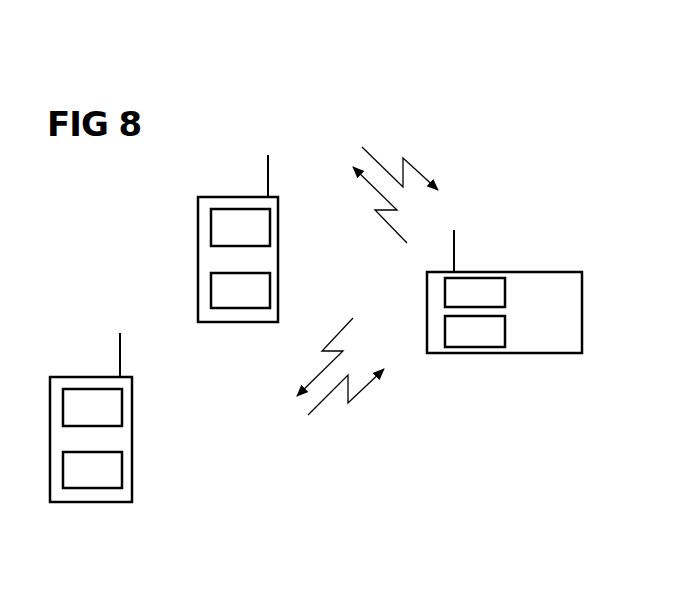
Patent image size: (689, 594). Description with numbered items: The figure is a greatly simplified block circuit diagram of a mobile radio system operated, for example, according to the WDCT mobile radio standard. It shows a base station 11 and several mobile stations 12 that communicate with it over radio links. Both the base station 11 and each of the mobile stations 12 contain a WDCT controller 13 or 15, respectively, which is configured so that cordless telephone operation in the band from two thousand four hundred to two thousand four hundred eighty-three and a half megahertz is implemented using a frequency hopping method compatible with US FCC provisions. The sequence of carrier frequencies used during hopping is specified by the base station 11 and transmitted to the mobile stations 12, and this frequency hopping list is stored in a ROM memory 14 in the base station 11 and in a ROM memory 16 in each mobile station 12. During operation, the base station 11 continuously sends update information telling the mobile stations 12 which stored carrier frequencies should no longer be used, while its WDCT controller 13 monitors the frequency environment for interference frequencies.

The base station 11 is at (562, 271).
The mobile station 12 is at (279, 215).
The WDCT controller 13 is at (496, 277).
The ROM memory 14 is at (467, 347).
The WDCT controller 15 is at (233, 208).
The ROM memory 16 is at (240, 308).